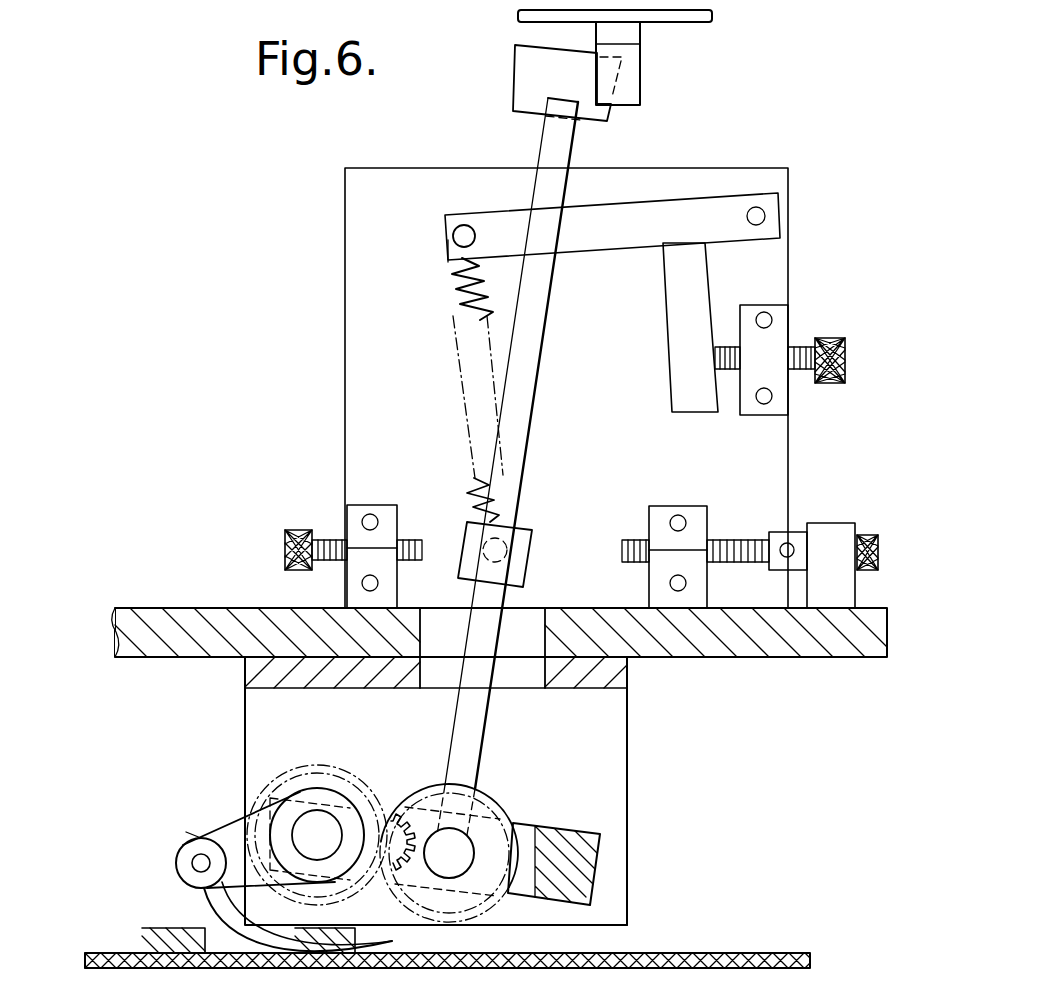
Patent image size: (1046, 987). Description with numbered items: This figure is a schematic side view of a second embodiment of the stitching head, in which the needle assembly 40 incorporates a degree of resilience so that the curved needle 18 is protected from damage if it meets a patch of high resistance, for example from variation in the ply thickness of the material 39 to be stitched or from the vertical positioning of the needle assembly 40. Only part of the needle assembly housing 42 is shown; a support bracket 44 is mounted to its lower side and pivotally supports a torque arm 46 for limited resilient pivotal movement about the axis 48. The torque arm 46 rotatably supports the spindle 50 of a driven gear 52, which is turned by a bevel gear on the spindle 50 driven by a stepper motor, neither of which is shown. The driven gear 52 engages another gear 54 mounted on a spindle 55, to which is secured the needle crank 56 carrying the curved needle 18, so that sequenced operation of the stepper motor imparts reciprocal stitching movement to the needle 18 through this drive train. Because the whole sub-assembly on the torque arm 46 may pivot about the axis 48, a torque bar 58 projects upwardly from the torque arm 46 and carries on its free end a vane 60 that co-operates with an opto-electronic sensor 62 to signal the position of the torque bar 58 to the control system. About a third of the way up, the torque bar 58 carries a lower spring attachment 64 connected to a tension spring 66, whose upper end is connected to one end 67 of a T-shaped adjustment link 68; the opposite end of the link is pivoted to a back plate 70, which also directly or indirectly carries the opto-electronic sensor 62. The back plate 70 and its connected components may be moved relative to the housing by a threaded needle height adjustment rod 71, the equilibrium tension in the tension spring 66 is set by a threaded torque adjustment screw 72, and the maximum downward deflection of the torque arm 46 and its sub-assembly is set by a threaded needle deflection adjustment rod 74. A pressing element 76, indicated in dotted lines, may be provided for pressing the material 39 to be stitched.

The curved needle 18 is at (200, 898).
The material 39 is at (735, 952).
The needle assembly 40 is at (170, 823).
The needle assembly housing 42 is at (165, 622).
The support bracket 44 is at (245, 703).
The torque arm 46 is at (627, 865).
The axis 48 is at (440, 843).
The spindle 50 is at (470, 840).
The driven gear 52 is at (497, 790).
The gear 54 is at (280, 768).
The gear hub 55 is at (322, 823).
The needle crank 56 is at (232, 820).
The torque bar 58 is at (478, 712).
The vane 60 is at (513, 70).
The opto-electronic sensor 62 is at (640, 70).
The lower spring attachment 64 is at (462, 535).
The tension spring 66 is at (440, 305).
The end of adjustment link 67 is at (452, 236).
The T-shaped adjustment link 68 is at (705, 195).
The back plate 70 is at (790, 212).
The needle height adjustment rod 71 is at (868, 532).
The torque adjustment screw 72 is at (830, 338).
The needle deflection adjustment rod 74 is at (302, 530).
The pressing element 76 is at (142, 935).